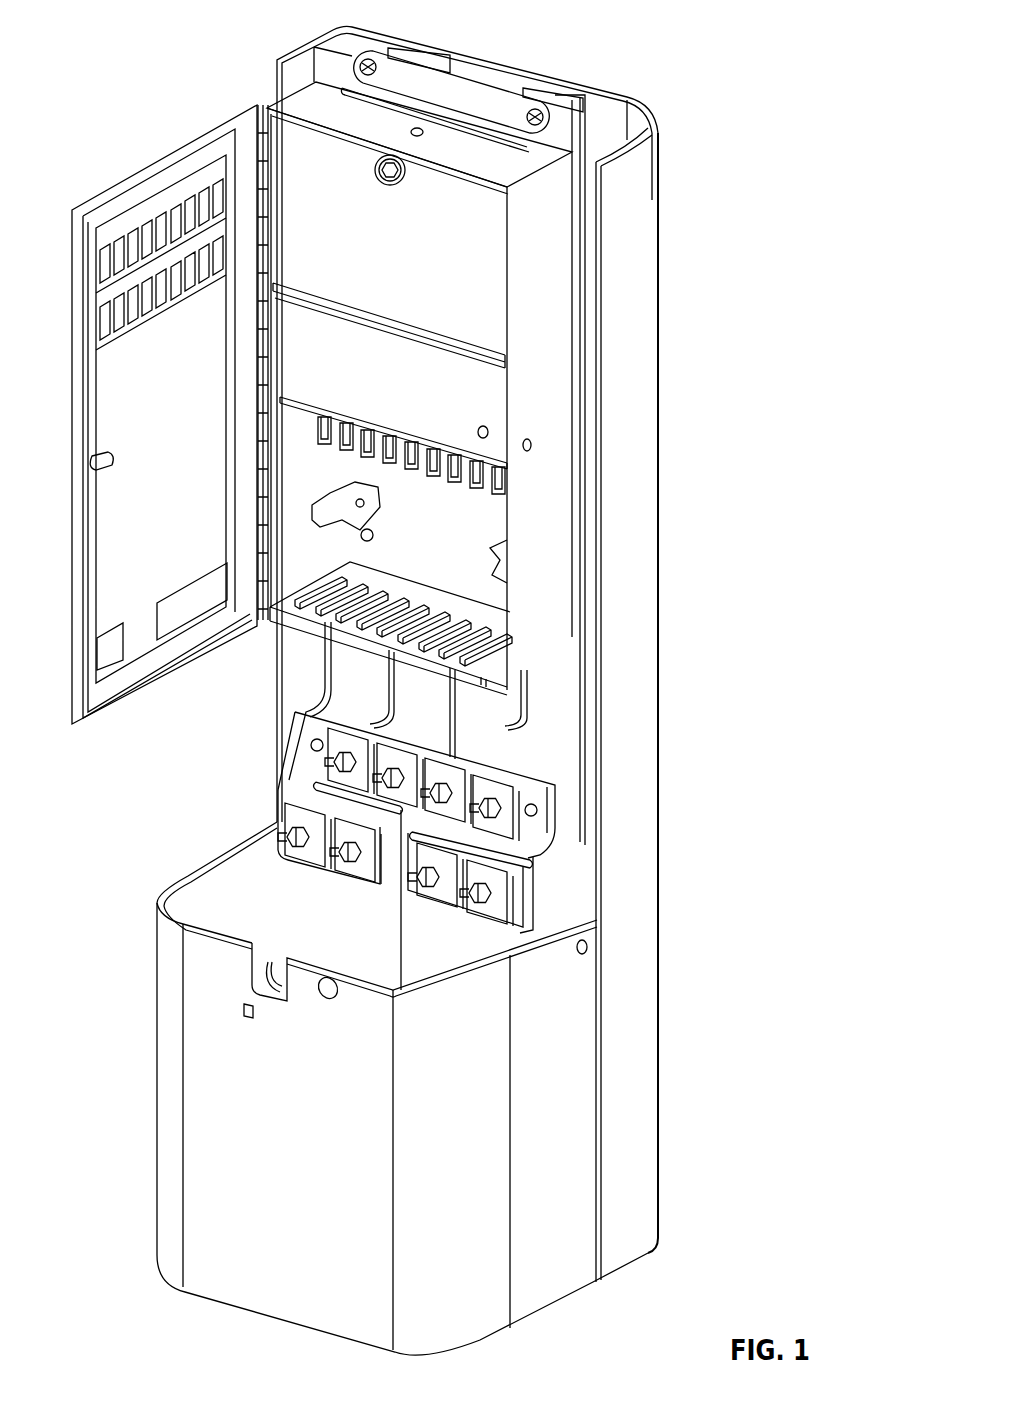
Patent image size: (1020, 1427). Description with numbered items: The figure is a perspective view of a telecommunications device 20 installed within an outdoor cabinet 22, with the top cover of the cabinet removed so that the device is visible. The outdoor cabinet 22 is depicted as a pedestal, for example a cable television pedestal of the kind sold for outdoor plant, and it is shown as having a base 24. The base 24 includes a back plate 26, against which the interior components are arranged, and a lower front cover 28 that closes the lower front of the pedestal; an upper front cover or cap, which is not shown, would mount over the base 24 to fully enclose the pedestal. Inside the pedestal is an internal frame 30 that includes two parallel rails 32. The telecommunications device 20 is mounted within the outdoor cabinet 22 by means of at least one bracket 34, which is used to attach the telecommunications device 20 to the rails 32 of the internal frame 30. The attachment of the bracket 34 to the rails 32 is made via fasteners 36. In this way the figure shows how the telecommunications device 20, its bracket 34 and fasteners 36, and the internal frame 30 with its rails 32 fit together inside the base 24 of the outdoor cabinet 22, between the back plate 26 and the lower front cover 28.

The telecommunications device 20 is at (482, 150).
The outdoor cabinet 22 is at (672, 248).
The base 24 is at (564, 1312).
The back plate 26 is at (590, 593).
The lower front cover 28 is at (313, 1227).
The internal frame 30 is at (560, 670).
The rails 32 is at (326, 690).
The bracket 34 is at (453, 97).
The fasteners 36 is at (360, 63).